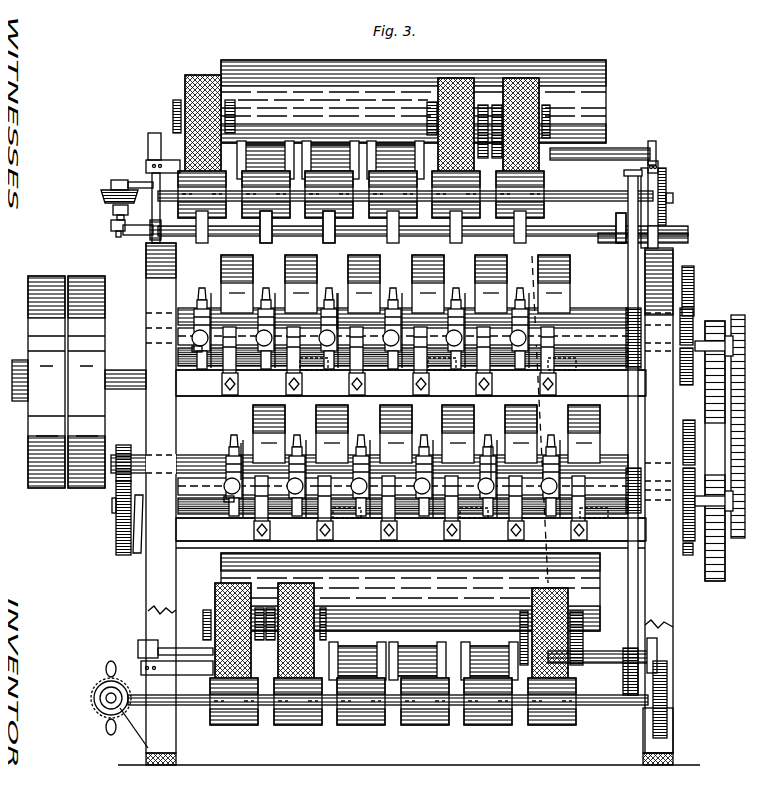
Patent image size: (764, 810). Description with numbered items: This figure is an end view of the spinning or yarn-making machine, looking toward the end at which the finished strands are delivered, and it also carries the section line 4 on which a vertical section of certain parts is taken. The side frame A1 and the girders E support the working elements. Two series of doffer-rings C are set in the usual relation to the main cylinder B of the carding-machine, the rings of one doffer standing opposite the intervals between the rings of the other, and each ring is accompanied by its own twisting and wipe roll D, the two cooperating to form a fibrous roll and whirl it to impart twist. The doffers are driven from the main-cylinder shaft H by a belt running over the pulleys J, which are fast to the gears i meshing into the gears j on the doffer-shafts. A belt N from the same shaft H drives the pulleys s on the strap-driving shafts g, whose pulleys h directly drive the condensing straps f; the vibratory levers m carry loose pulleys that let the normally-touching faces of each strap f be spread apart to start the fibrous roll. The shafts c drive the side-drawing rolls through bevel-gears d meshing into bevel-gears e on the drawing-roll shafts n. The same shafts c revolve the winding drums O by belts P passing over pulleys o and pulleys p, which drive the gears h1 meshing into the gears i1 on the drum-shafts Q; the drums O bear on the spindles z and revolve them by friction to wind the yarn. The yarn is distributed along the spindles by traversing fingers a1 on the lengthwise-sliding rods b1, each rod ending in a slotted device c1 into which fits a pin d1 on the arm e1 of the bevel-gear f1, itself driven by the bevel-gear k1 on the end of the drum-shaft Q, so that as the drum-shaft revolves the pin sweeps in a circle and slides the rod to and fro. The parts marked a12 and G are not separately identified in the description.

The side frame A1 is at (409, 449).
The main cylinder B is at (413, 345).
The spindles z is at (166, 108).
The revolving drums O is at (377, 448).
The drum-shaft Q is at (611, 188).
The traversing fingers a1 is at (546, 218).
The clamp a12 is at (258, 233).
The lengthwise-sliding rods b1 is at (283, 226).
The section line 4 is at (538, 414).
The bevel-gear f1 is at (100, 188).
The bevel-gear k1 is at (140, 175).
The arm e1 is at (120, 202).
The slotted device c1 is at (106, 223).
The pin d1 is at (103, 213).
The gears i1 is at (660, 165).
The gears h1 is at (666, 188).
The belts P is at (620, 268).
The pulleys p is at (614, 200).
The shafts c is at (604, 335).
The strap-driving shafts g is at (612, 340).
The doffer-rings C is at (410, 359).
The bevel-gears d is at (376, 402).
The twisting and wipe rolls D is at (413, 434).
The bevel-gears e is at (186, 326).
The drawing-roll shafts n is at (186, 340).
The pulleys h is at (210, 362).
The condensing straps f is at (420, 449).
The vibratory levers m is at (330, 288).
The girders E is at (411, 455).
The pulleys o is at (634, 352).
The main-cylinder shaft H is at (121, 385).
The gears j is at (688, 278).
The gears i is at (676, 380).
The plate G is at (715, 451).
The pulleys J is at (697, 406).
The belt N is at (737, 418).
The pulleys s is at (737, 350).